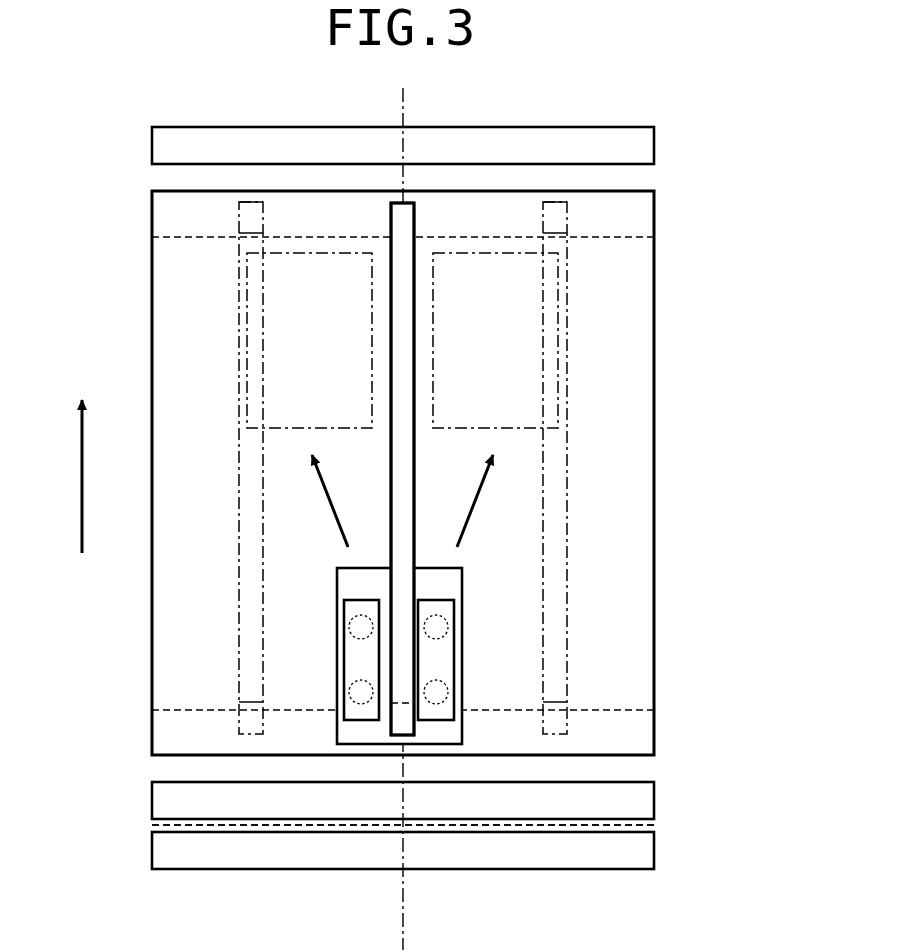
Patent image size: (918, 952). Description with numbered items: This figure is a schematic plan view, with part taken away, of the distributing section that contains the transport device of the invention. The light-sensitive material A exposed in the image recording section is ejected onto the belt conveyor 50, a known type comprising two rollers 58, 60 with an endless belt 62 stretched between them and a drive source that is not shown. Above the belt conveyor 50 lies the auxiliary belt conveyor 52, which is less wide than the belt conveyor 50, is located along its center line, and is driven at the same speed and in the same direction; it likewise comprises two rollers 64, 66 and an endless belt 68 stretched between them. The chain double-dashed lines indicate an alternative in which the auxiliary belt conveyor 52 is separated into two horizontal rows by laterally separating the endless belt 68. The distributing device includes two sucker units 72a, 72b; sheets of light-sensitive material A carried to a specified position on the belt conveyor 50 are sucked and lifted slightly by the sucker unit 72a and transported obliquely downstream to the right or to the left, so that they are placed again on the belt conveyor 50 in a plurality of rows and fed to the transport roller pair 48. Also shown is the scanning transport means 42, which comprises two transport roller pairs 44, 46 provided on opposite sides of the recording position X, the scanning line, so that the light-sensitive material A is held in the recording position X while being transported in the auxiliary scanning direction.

The scanning transport means 42 is at (664, 828).
The transport roller pair 44 is at (170, 847).
The transport roller pair 46 is at (168, 790).
The transport roller pair 48 is at (637, 150).
The belt conveyor 50 is at (697, 395).
The auxiliary belt conveyor 52 is at (378, 216).
The roller 58 is at (615, 742).
The roller 60 is at (620, 220).
The endless belt 62 is at (613, 562).
The roller 64 is at (417, 740).
The roller 66 is at (418, 212).
The endless belt 68 is at (415, 283).
The sucker unit 72a is at (437, 648).
The sucker unit 72b is at (361, 665).
The light-sensitive material A is at (287, 425).
The recording position X is at (593, 821).